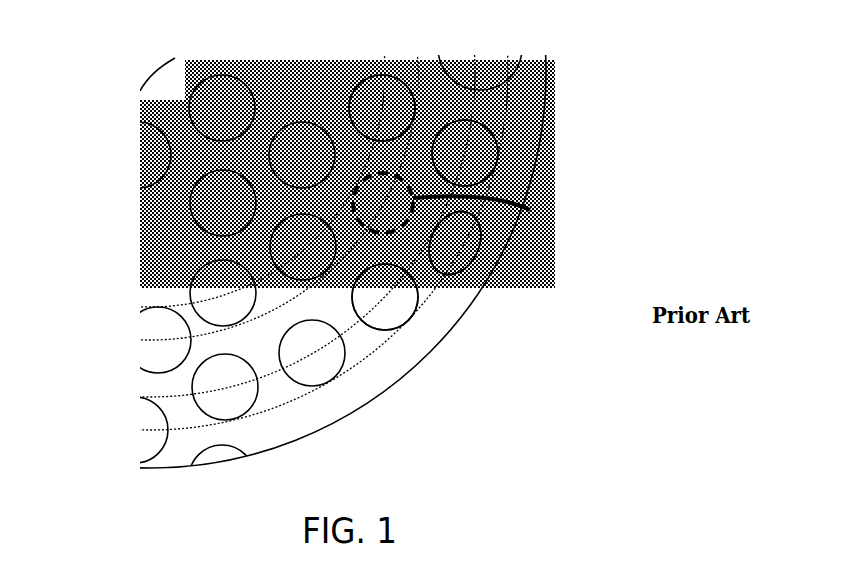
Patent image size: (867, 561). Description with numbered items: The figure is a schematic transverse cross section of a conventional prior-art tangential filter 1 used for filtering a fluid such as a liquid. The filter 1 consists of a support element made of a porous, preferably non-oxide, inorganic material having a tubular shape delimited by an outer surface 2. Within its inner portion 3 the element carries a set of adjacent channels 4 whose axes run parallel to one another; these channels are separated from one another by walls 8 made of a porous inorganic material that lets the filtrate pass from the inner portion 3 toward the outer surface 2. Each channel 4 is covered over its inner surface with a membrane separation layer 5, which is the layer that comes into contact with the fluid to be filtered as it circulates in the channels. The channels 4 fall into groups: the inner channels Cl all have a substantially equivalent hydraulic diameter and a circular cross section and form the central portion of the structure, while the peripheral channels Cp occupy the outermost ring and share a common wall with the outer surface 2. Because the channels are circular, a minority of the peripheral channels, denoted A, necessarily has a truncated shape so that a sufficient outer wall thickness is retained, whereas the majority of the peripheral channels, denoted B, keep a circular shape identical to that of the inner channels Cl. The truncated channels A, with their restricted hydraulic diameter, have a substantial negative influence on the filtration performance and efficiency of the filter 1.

The tangential filter 1 is at (118, 115).
The outer surface 2 is at (317, 430).
The inner portion 3 is at (343, 215).
The channels 4 is at (227, 213).
The membrane separation layer 5 is at (482, 210).
The walls 8 is at (218, 250).
The inner channels Cl is at (422, 107).
The peripheral channels Cp is at (510, 149).
The truncated peripheral channels A is at (460, 275).
The circular peripheral channels B is at (404, 340).